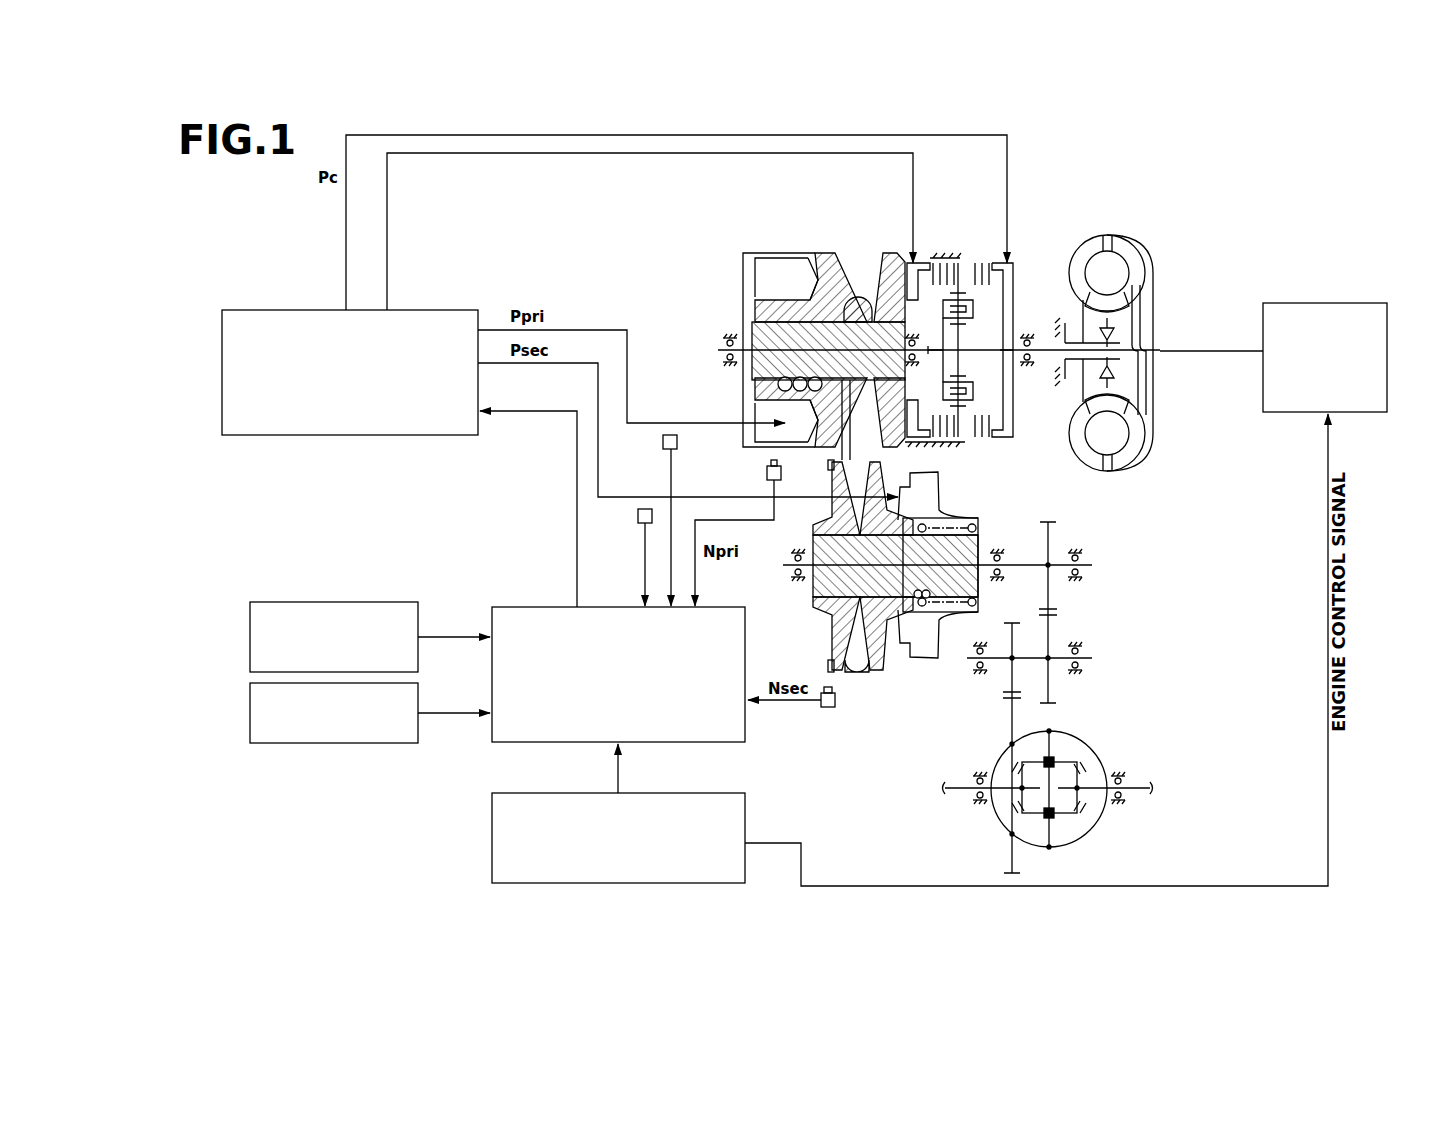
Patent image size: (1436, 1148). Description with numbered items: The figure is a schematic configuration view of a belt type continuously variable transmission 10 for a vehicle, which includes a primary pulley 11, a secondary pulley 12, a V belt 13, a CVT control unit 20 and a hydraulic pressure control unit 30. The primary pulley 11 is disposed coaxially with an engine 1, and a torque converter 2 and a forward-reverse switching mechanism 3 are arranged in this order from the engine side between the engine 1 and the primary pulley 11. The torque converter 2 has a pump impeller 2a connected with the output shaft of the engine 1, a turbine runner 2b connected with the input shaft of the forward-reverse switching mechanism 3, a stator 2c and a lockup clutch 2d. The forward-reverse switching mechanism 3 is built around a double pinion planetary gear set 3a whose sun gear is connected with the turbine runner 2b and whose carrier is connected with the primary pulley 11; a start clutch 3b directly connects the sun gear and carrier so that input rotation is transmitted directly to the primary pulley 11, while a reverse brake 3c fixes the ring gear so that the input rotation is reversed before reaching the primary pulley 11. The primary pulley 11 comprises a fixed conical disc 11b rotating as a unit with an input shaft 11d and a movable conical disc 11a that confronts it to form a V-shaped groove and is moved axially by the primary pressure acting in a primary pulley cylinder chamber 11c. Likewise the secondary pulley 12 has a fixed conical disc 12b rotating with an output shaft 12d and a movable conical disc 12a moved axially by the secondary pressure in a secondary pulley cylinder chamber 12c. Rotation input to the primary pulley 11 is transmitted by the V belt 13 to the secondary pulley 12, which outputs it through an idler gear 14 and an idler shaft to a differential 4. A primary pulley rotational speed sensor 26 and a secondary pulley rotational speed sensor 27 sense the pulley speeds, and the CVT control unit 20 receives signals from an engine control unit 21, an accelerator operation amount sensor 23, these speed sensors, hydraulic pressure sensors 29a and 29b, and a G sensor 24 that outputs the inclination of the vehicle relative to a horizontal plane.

The engine 1 is at (1305, 303).
The torque converter 2 is at (1130, 307).
The pump impeller 2a is at (1080, 257).
The turbine runner 2b is at (1135, 262).
The stator 2c is at (1115, 300).
The lockup clutch 2d is at (1145, 331).
The forward-reverse switching mechanism 3 is at (984, 302).
The double pinion planetary gear set 3a is at (965, 266).
The start clutch 3b is at (1013, 278).
The reverse brake 3c is at (935, 268).
The differential 4 is at (1098, 730).
The belt type continuously variable transmission 10 is at (889, 307).
The primary pulley 11 is at (889, 307).
The movable conical disc 11a is at (830, 262).
The fixed conical disc 11b is at (893, 251).
The primary pulley cylinder chamber 11c is at (773, 270).
The input shaft 11d is at (1043, 357).
The secondary pulley 12 is at (902, 602).
The movable conical disc 12a is at (880, 678).
The fixed conical disc 12b is at (808, 640).
The secondary pulley cylinder chamber 12c is at (900, 660).
The output shaft 12d is at (1018, 565).
The V belt 13 is at (862, 456).
The idler gear 14 is at (1012, 640).
The CVT control unit 20 is at (540, 607).
The engine control unit 21 is at (492, 840).
The accelerator operation amount sensor 23 is at (300, 602).
The G sensor 24 is at (290, 743).
The primary pulley rotational speed sensor 26 is at (767, 473).
The secondary pulley rotational speed sensor 27 is at (828, 710).
The hydraulic pressure sensor 29a is at (663, 442).
The hydraulic pressure sensor 29b is at (638, 516).
The hydraulic pressure control unit 30 is at (272, 310).